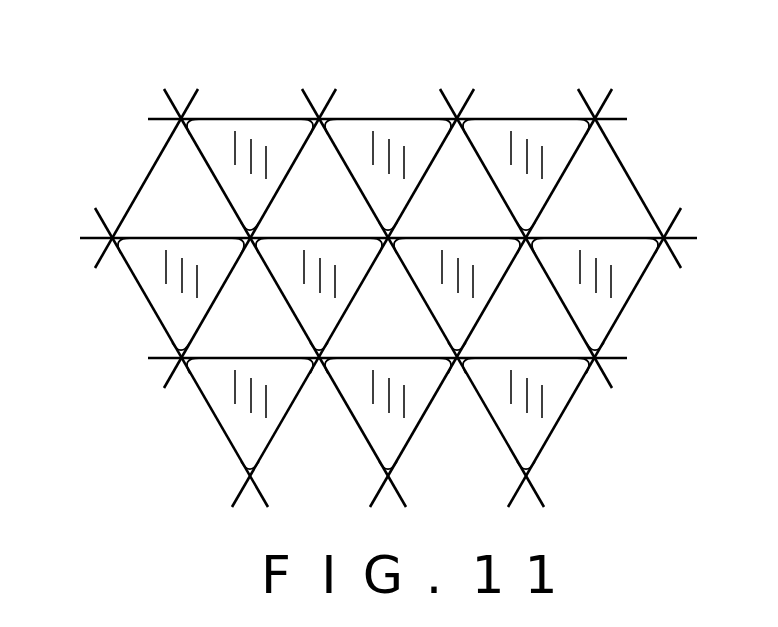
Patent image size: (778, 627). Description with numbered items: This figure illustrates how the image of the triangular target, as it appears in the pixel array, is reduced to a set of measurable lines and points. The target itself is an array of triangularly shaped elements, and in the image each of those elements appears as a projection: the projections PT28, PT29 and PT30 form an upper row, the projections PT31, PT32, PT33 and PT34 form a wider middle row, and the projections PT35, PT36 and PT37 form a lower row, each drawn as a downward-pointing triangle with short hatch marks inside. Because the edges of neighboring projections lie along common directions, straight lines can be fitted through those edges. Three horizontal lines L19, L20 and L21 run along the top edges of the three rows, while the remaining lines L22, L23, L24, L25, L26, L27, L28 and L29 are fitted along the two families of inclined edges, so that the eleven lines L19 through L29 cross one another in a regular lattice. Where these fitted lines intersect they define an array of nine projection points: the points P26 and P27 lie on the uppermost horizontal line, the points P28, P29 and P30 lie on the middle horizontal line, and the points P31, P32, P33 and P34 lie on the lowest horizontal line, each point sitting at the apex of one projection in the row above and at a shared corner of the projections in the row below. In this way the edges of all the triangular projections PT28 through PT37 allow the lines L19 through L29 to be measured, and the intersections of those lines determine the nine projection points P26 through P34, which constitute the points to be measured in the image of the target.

The line L19 is at (157, 120).
The line L20 is at (97, 240).
The line L21 is at (163, 357).
The line L22 is at (97, 216).
The line L23 is at (167, 97).
The line L24 is at (307, 98).
The line L25 is at (445, 92).
The line L26 is at (680, 212).
The line L27 is at (610, 90).
The line L28 is at (468, 92).
The line L29 is at (323, 93).
The projection PT28 is at (276, 117).
The projection PT29 is at (421, 116).
The projection PT30 is at (562, 116).
The projection PT31 is at (208, 237).
The projection PT32 is at (354, 237).
The projection PT33 is at (490, 237).
The projection PT34 is at (635, 235).
The projection PT35 is at (287, 357).
The projection PT36 is at (427, 357).
The projection PT37 is at (563, 357).
The projection point P26 is at (320, 123).
The projection point P27 is at (457, 123).
The projection point P28 is at (252, 247).
The projection point P29 is at (390, 247).
The projection point P30 is at (526, 247).
The projection point P31 is at (183, 363).
The projection point P32 is at (321, 363).
The projection point P33 is at (459, 363).
The projection point P34 is at (597, 363).